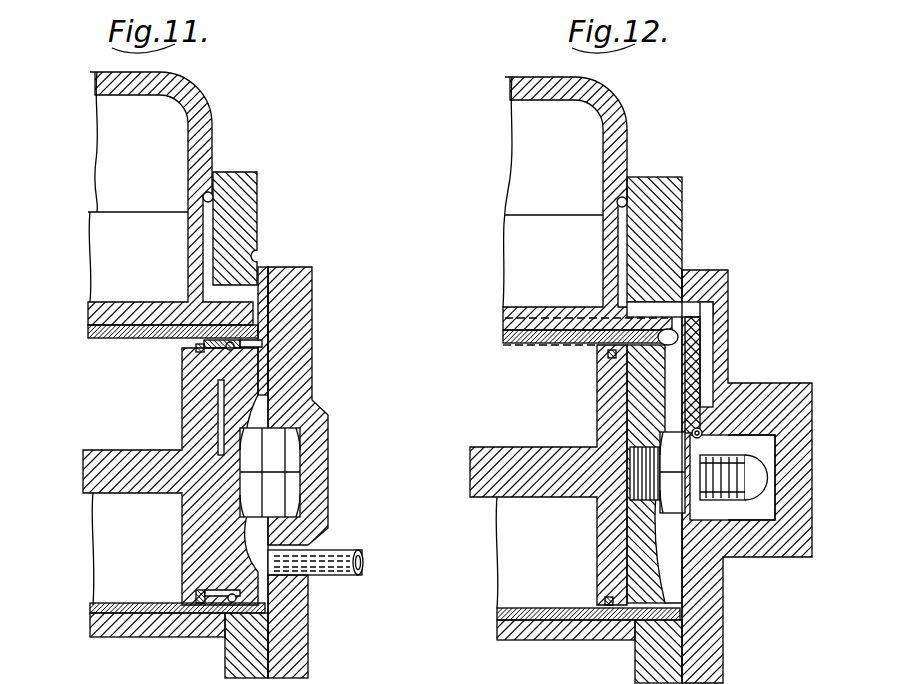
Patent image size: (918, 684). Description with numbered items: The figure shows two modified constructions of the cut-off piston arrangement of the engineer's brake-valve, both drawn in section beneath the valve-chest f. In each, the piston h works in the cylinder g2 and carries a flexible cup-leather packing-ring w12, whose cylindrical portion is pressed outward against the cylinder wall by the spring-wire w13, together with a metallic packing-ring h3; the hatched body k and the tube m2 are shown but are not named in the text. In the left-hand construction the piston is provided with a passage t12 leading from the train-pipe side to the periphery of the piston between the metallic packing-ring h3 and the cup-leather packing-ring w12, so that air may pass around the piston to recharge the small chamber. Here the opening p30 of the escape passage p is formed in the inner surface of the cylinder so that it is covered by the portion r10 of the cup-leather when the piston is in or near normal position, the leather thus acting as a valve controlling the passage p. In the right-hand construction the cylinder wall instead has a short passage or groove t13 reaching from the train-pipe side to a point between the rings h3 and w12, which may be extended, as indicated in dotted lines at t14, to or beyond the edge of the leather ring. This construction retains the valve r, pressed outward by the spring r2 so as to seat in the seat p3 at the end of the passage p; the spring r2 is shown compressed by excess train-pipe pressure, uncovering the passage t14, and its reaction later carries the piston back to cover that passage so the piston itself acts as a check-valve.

In FIG. 11, the valve-chest f is at (459, 342).
In FIG. 12, the valve-chest f is at (459, 342).
In FIG. 11, the passage p is at (212, 196).
In FIG. 12, the passage p is at (707, 335).
In FIG. 11, the opening of the passage p p30 is at (262, 322).
In FIG. 11, the portion of the cup-leather packing-ring r10 is at (258, 344).
In FIG. 11, the metallic packing-ring h3 is at (196, 344).
In FIG. 12, the metallic packing-ring h3 is at (605, 603).
In FIG. 11, the cup-leather packing-ring w12 is at (220, 366).
In FIG. 12, the cup-leather packing-ring w12 is at (633, 577).
In FIG. 11, the body casting k is at (182, 420).
In FIG. 11, the tube m2 is at (323, 548).
In FIG. 12, the tube m2 is at (520, 366).
In FIG. 11, the passage t12 is at (210, 590).
In FIG. 11, the cylinder g2 is at (90, 610).
In FIG. 12, the cylinder g2 is at (459, 342).
In FIG. 11, the spring-wire w13 is at (214, 615).
In FIG. 12, the piston h is at (600, 426).
In FIG. 12, the valve r is at (751, 478).
In FIG. 12, the spring r2 is at (720, 510).
In FIG. 12, the seat p3 is at (777, 510).
In FIG. 12, the short passage t13 is at (602, 614).
In FIG. 12, the recharging-passage t14 is at (622, 628).